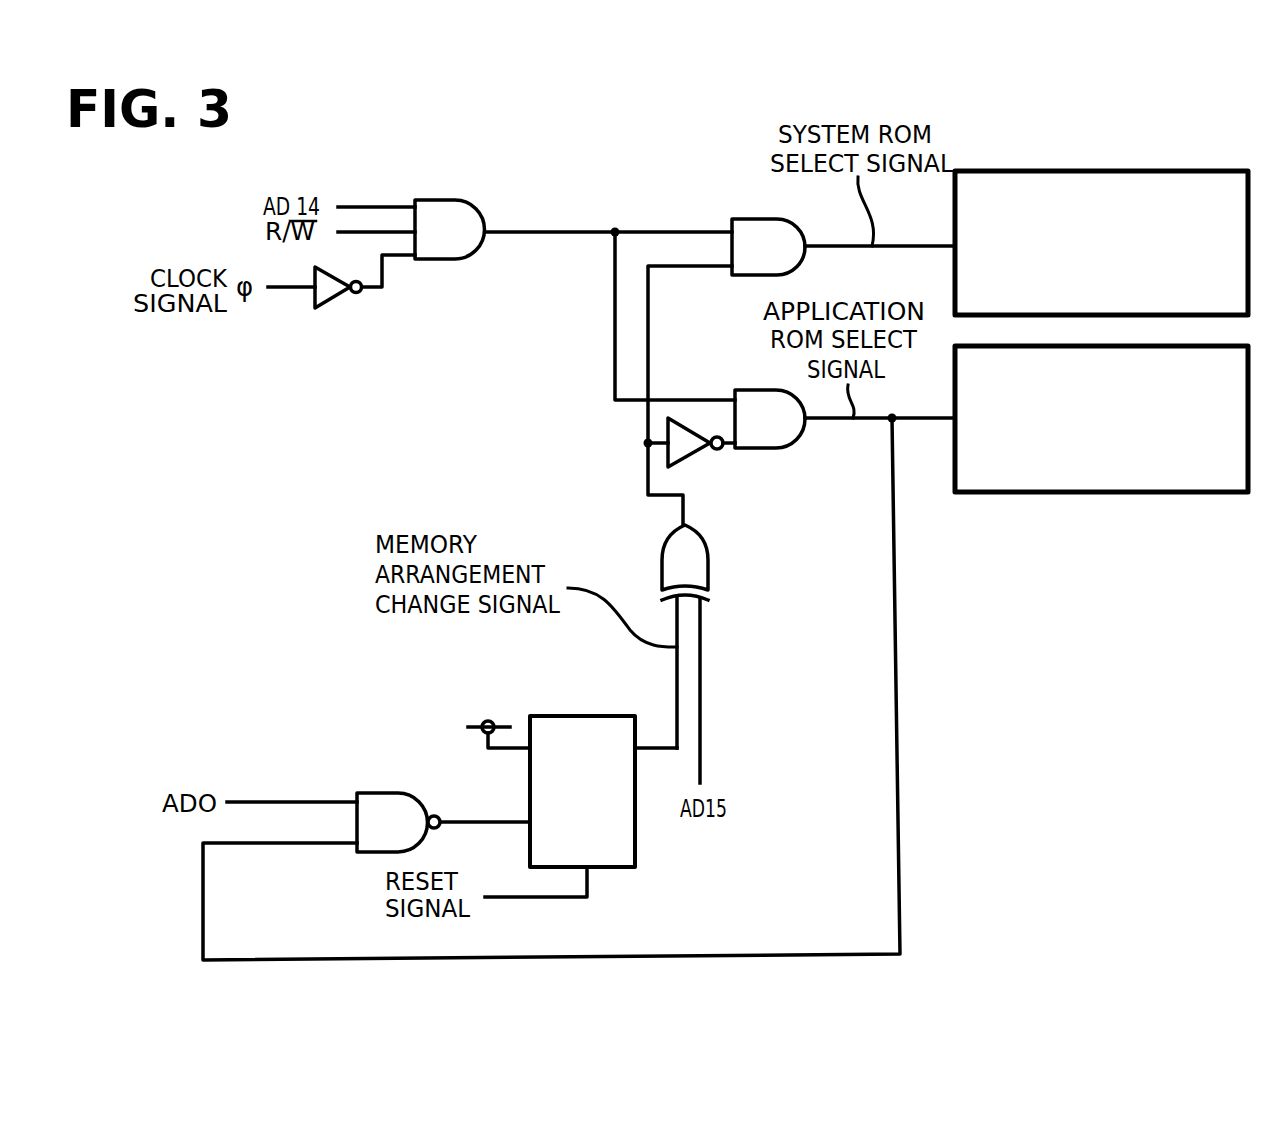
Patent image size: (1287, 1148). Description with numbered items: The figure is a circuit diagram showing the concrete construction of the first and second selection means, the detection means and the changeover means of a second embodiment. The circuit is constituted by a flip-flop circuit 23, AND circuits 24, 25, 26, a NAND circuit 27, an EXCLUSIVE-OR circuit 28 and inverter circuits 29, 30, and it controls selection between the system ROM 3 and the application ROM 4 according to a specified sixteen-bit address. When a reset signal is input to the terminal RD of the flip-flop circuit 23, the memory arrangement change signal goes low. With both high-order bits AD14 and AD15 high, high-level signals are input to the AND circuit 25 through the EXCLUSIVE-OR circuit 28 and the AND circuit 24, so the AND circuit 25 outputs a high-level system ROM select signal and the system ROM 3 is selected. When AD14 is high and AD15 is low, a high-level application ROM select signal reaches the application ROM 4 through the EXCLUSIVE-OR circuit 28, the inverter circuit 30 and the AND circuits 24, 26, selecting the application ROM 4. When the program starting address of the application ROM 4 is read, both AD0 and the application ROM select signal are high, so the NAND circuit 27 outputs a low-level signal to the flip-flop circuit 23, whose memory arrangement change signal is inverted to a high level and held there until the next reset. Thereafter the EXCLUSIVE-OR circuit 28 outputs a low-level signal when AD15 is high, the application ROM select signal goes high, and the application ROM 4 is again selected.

The system ROM 3 is at (1090, 171).
The application ROM 4 is at (1093, 492).
The flip-flop circuit 23 is at (635, 838).
The AND circuit 24 is at (434, 200).
The AND circuit 25 is at (763, 219).
The AND circuit 26 is at (760, 390).
The NAND circuit 27 is at (395, 793).
The EXCLUSIVE-OR circuit 28 is at (708, 560).
The inverter circuit 29 is at (334, 301).
The inverter circuit 30 is at (696, 457).